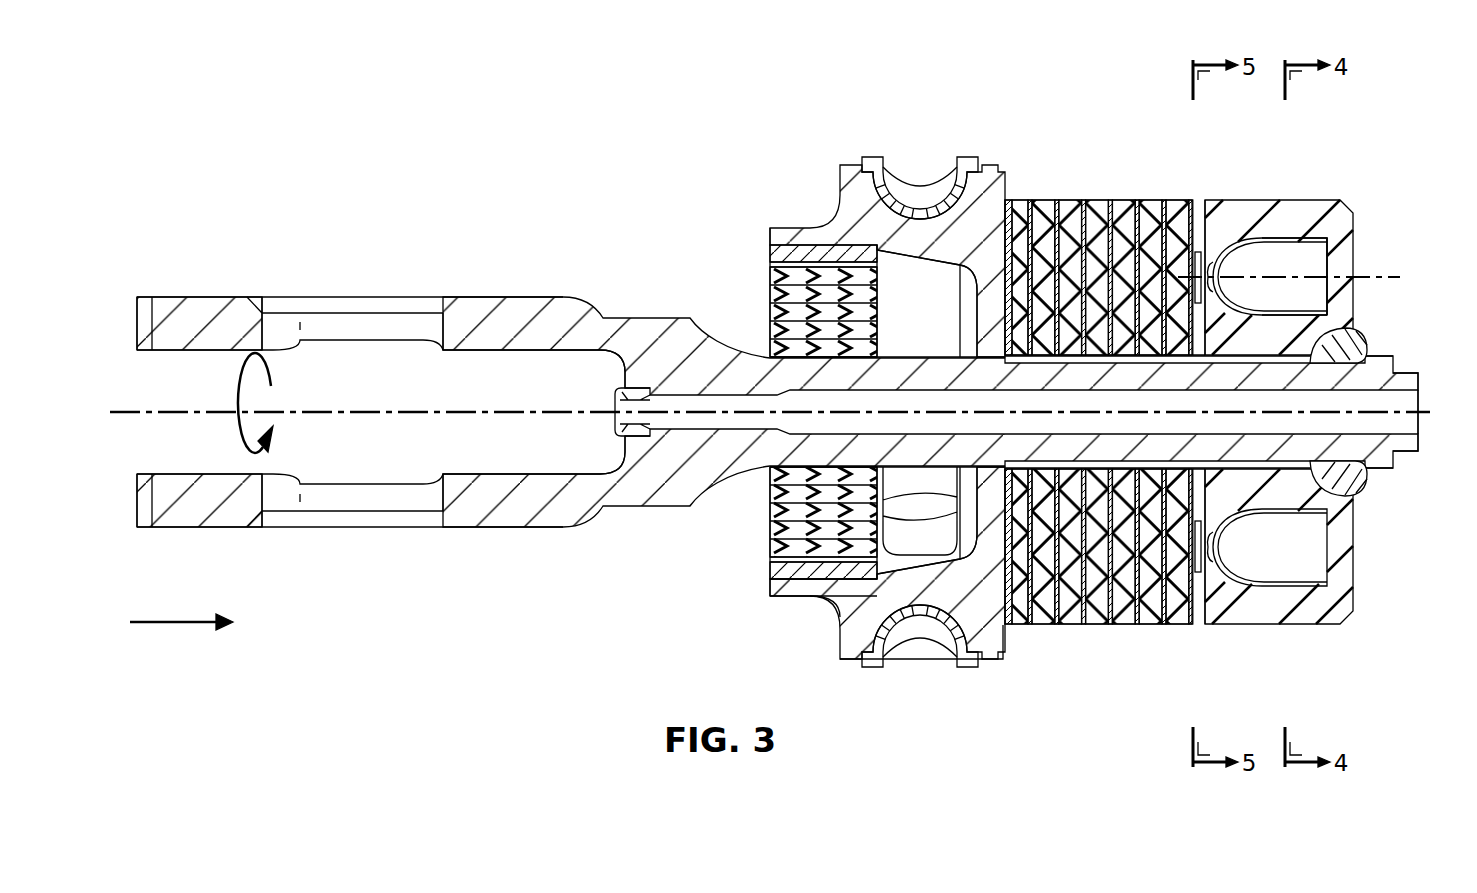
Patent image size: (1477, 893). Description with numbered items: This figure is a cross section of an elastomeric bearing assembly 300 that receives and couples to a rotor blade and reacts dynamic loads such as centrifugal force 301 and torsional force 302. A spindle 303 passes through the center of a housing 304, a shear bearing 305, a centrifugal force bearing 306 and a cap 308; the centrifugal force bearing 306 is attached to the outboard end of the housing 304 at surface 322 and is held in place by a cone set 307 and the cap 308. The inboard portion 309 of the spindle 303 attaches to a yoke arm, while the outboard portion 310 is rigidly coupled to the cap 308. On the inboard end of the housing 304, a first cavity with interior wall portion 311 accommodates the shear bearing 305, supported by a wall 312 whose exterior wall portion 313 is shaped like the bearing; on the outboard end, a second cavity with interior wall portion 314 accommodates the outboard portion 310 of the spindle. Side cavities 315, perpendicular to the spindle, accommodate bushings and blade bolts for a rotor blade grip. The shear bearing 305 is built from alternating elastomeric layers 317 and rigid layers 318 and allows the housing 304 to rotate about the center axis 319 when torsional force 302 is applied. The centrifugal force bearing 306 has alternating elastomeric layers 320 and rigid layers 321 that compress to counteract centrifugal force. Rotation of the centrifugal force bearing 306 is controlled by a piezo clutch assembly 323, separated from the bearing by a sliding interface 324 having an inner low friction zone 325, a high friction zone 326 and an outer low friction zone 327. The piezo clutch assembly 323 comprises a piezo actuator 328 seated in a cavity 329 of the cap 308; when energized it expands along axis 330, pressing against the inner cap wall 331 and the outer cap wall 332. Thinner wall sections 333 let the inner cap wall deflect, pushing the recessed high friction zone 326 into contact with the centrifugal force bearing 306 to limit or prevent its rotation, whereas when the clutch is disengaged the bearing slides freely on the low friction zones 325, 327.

The elastomeric bearing assembly 300 is at (296, 135).
The centrifugal force 301 is at (165, 628).
The torsional force 302 is at (234, 393).
The spindle 303 is at (642, 328).
The housing 304 is at (990, 182).
The shear bearing 305 is at (745, 521).
The centrifugal force bearing 306 is at (1050, 190).
The cone set 307 is at (1360, 494).
The cap 308 is at (1323, 200).
The inboard portion 309 is at (517, 520).
The outboard portion 310 is at (1381, 478).
The interior wall portion 311 is at (770, 568).
The wall 312 is at (814, 600).
The exterior wall portion 313 is at (779, 596).
The interior wall portion 314 is at (992, 344).
The cavities 315 is at (925, 184).
The elastomeric layers 317 is at (770, 242).
The rigid layers 318 is at (770, 288).
The center axis 319 is at (133, 413).
The elastomeric layers 320 is at (1094, 205).
The rigid layers 321 is at (1123, 205).
The surface 322 is at (1007, 651).
The piezo clutch assembly 323 is at (1290, 216).
The sliding interface 324 is at (1197, 628).
The inner low friction zone 325 is at (1223, 364).
The high friction zone 326 is at (1191, 205).
The outer low friction zone 327 is at (1199, 250).
The piezo actuator 328 is at (1336, 240).
The cavity 329 is at (1340, 305).
The axis 330 is at (1387, 282).
The inner cap wall 331 is at (1223, 273).
The outer cap wall 332 is at (1350, 266).
The thinner wall sections 333 is at (1221, 530).